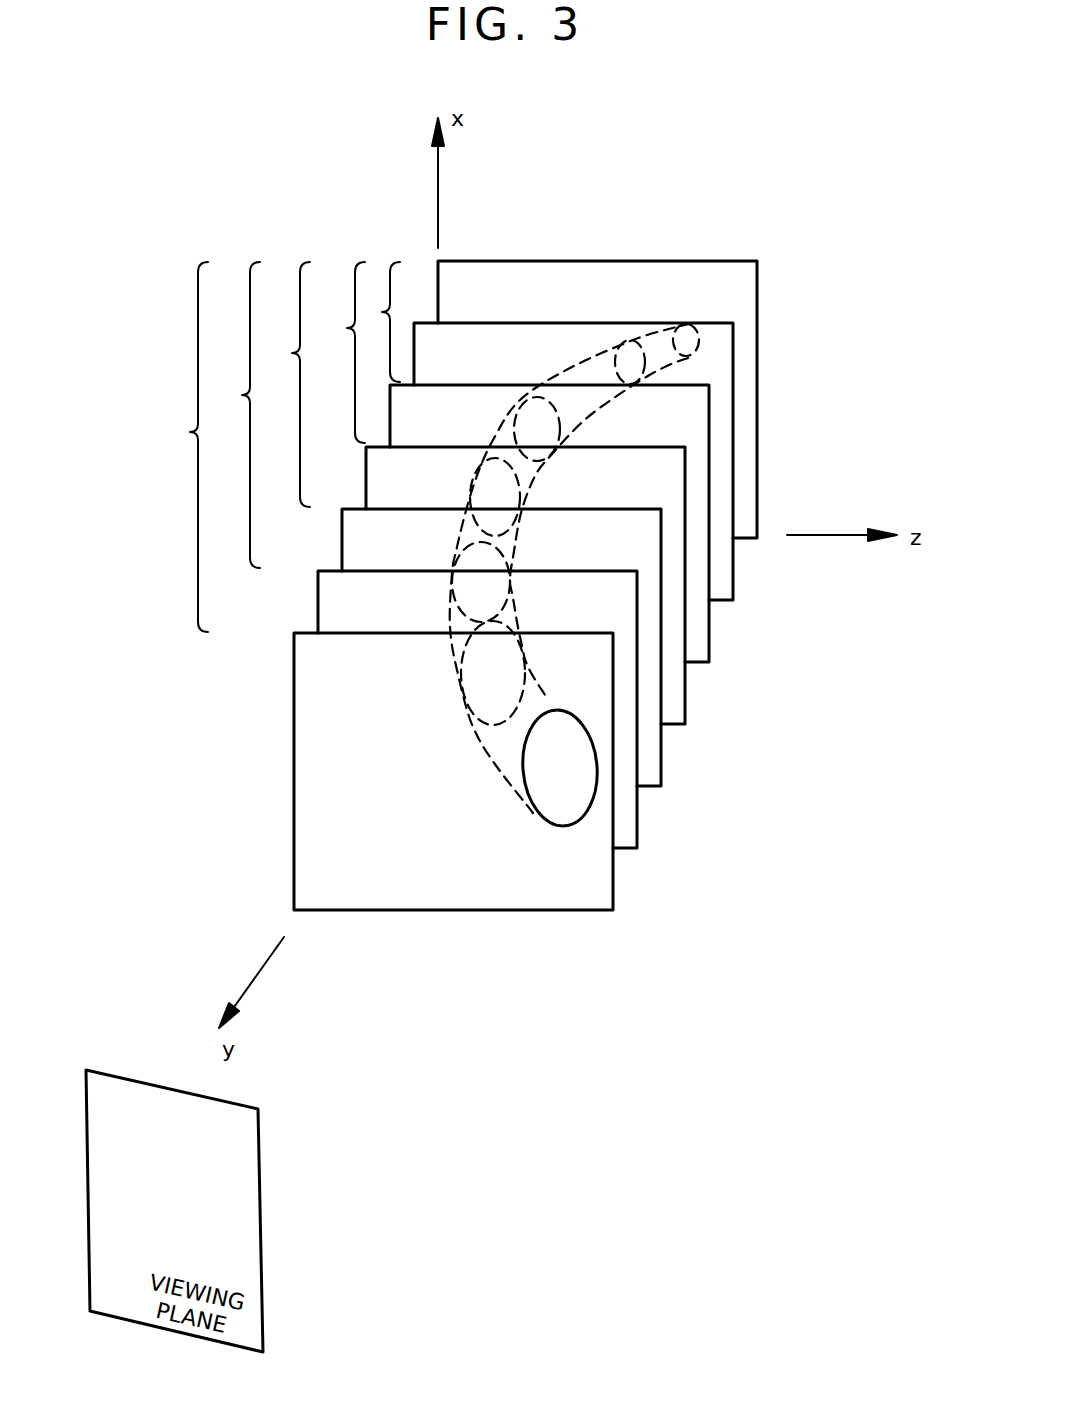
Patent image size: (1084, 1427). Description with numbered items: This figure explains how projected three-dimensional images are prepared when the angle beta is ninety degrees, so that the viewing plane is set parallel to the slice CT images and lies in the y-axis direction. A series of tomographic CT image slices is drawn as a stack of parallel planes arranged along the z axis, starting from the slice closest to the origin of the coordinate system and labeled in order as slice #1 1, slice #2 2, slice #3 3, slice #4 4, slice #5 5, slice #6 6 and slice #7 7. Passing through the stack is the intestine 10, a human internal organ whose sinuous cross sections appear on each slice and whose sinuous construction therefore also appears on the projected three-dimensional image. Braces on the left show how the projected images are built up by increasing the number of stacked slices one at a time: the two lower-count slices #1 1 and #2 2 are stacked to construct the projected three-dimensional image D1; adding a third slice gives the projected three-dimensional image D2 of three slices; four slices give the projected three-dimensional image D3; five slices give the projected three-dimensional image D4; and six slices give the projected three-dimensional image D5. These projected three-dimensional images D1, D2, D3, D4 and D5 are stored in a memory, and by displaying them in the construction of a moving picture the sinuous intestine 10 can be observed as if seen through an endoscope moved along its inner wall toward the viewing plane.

The CT image slice # 1 is at (758, 280).
The CT image slice # 2 is at (735, 575).
The CT image slice # 3 is at (712, 637).
The CT image slice # 4 is at (688, 699).
The CT image slice # 5 is at (663, 757).
The CT image slice # 6 is at (640, 826).
The CT image slice # 7 is at (613, 886).
The intestine 10 is at (545, 822).
The projected three-dimensional image D1 is at (378, 322).
The projected three-dimensional image D2 is at (339, 352).
The projected three-dimensional image D3 is at (284, 384).
The projected three-dimensional image D4 is at (234, 415).
The projected three-dimensional image D5 is at (180, 447).